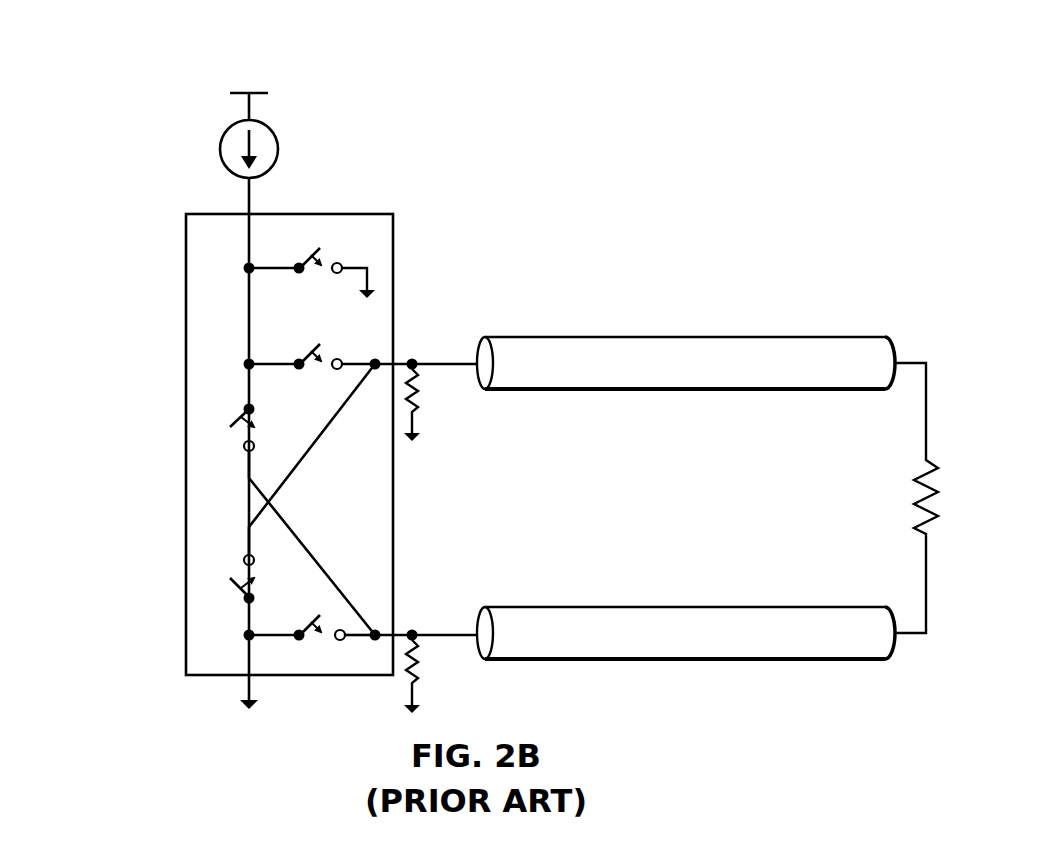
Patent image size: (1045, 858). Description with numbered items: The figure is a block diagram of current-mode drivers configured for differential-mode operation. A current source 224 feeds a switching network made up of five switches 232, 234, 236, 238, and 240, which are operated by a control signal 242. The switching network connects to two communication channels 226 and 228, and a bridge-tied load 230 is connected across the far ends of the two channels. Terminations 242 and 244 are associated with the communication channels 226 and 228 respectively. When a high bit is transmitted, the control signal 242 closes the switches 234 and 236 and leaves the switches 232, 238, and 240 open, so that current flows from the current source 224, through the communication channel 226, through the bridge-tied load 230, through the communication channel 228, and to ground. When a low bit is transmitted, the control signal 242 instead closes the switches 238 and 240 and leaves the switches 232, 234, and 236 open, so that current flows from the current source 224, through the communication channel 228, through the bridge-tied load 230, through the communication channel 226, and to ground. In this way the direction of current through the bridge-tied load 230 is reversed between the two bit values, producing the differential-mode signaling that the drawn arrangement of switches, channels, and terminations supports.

The current source 224 is at (233, 122).
The communication channel 226 is at (686, 363).
The communication channel 228 is at (686, 633).
The bridge-tied load 230 is at (902, 487).
The switch 232 is at (317, 238).
The switch 234 is at (310, 346).
The switch 236 is at (320, 603).
The switch 238 is at (228, 413).
The switch 240 is at (225, 572).
The control signal 242 is at (186, 443).
The termination 244 is at (427, 660).